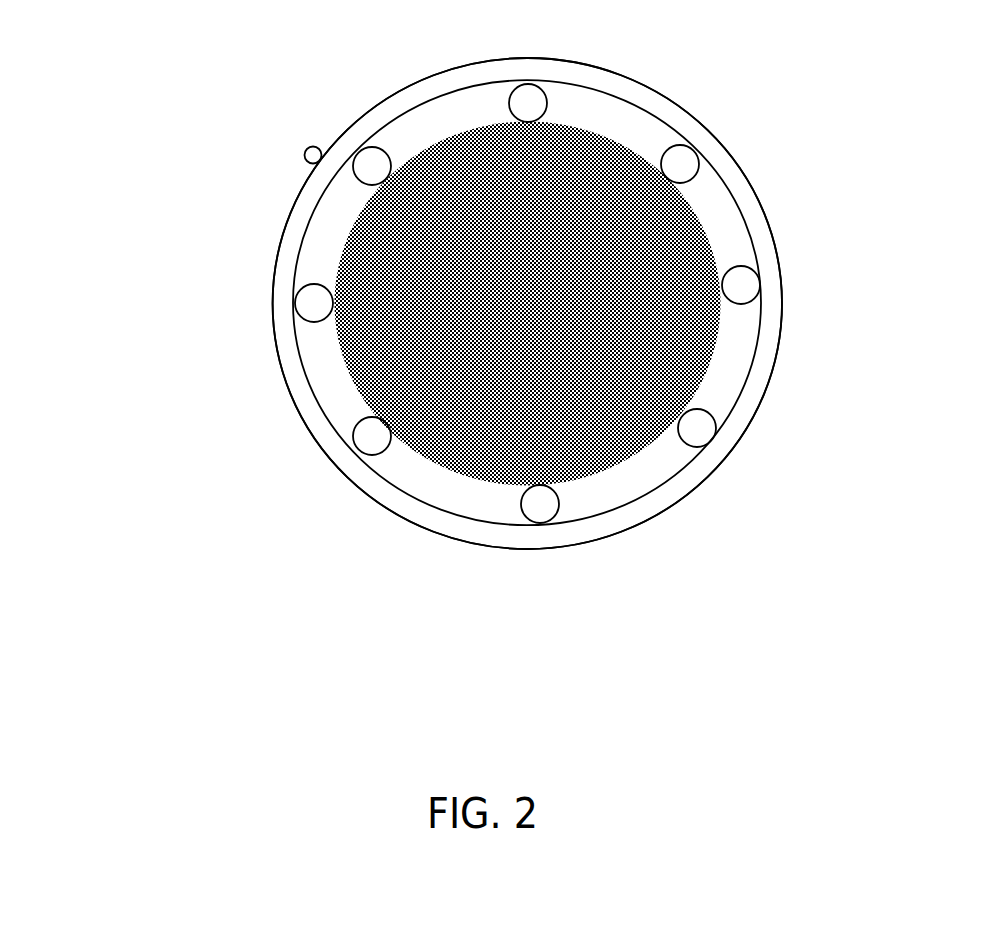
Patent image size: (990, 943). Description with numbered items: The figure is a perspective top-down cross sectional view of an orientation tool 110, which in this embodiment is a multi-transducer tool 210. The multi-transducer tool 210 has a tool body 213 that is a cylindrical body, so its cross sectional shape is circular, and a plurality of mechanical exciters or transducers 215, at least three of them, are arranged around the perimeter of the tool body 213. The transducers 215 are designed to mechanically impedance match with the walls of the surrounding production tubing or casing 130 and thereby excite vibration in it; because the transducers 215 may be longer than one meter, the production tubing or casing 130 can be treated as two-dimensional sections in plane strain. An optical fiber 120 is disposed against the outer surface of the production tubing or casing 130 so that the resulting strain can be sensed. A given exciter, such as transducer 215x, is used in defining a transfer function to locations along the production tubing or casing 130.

The orientation tool 110 is at (881, 150).
The optical fiber 120 is at (298, 141).
The production tubing or casing 130 is at (290, 358).
The multi-transducer tool 210 is at (609, 280).
The tool body 213 is at (410, 326).
The transducers 215 is at (378, 462).
The transducer 215x is at (772, 289).